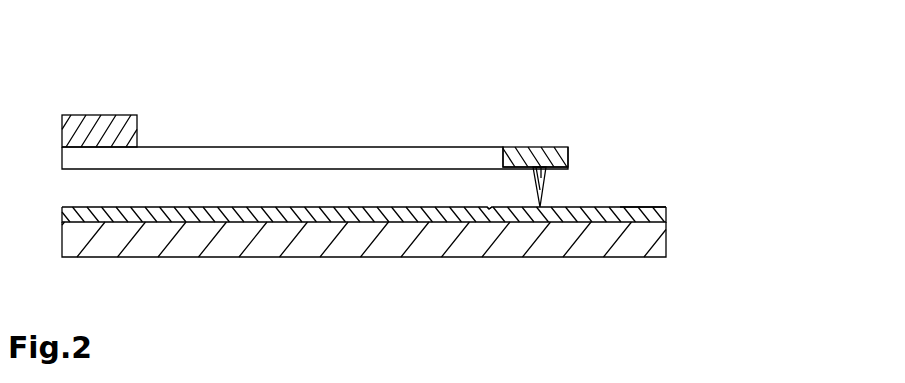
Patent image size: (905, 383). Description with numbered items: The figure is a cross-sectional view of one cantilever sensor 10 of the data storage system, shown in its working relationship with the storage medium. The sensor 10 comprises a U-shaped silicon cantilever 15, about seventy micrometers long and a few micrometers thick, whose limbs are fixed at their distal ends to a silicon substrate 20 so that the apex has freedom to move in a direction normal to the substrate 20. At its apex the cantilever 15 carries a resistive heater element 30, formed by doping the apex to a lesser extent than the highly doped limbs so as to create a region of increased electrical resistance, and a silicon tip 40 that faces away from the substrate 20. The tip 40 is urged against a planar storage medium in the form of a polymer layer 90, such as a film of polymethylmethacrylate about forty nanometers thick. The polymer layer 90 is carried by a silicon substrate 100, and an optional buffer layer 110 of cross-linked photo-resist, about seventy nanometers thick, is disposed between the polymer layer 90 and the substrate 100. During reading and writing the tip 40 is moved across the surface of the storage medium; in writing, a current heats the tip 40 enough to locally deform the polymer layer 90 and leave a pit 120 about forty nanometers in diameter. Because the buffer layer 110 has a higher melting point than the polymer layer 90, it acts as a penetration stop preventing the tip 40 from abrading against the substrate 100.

The cantilever sensor 10 is at (385, 118).
The cantilever 15 is at (293, 146).
The substrate 20 is at (110, 115).
The resistive heater element 30 is at (538, 146).
The silicon tip 40 is at (546, 180).
The polymer layer 90 is at (666, 213).
The silicon substrate 100 is at (666, 245).
The buffer layer 110 is at (666, 215).
The pit 120 is at (489, 209).